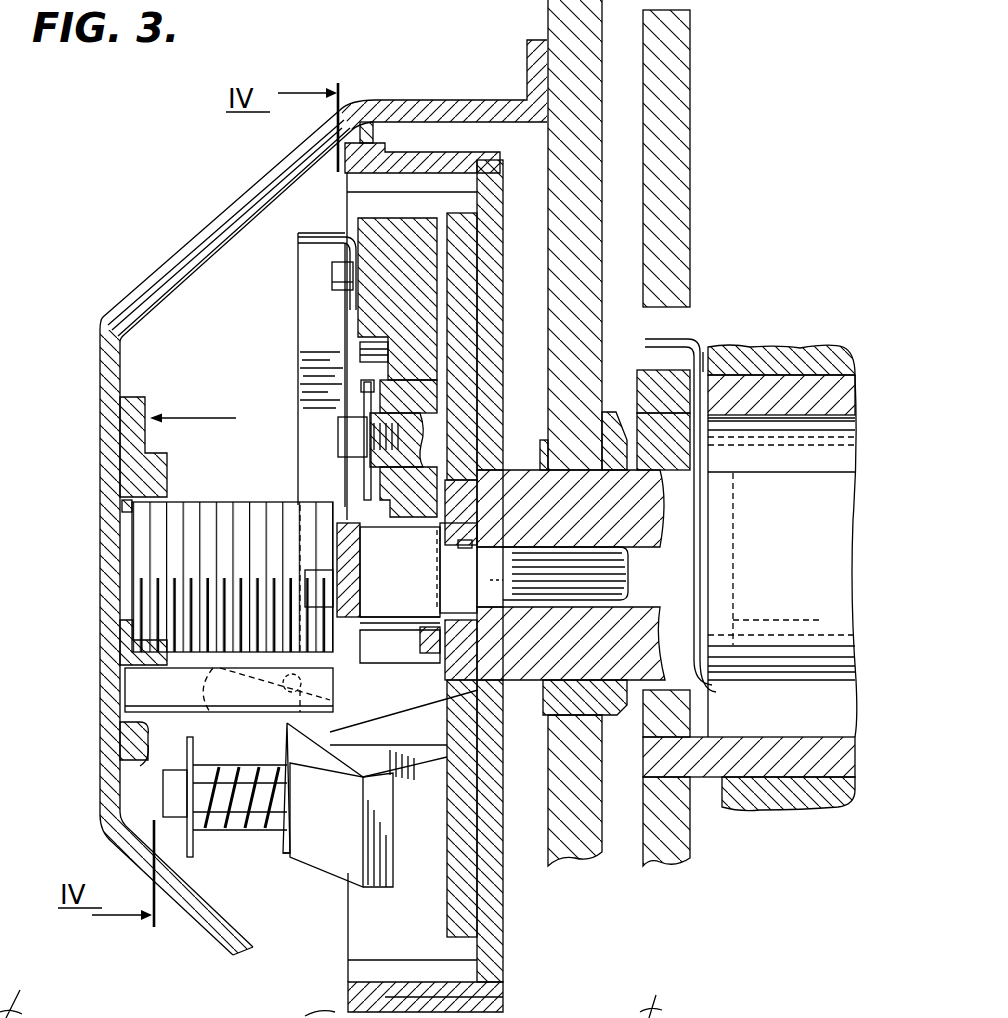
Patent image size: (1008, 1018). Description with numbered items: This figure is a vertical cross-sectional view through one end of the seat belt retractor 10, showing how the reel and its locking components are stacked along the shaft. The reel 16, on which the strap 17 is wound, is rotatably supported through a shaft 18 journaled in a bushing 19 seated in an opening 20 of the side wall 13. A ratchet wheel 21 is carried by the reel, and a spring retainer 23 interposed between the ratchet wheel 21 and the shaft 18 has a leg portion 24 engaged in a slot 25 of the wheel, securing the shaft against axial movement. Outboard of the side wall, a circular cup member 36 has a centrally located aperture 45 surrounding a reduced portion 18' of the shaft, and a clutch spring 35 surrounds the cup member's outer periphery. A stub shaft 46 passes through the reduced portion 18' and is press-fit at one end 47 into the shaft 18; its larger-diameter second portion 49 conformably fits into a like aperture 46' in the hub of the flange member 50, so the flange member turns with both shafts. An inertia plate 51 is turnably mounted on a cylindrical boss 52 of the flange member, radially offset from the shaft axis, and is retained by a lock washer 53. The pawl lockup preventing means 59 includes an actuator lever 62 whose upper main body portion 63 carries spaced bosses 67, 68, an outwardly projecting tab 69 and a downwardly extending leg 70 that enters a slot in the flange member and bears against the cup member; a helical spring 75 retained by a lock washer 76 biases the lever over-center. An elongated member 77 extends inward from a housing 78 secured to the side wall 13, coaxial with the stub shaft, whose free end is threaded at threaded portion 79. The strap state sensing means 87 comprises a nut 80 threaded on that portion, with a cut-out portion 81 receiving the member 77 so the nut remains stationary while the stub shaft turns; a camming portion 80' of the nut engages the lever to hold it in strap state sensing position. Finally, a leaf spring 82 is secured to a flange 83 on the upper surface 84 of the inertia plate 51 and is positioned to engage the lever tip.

The seat belt retractor 10 is at (808, 126).
The side wall 13 is at (548, 18).
The reel 16 is at (775, 380).
The strap 17 is at (832, 365).
The shaft 18 is at (793, 556).
The reduced portion of shaft 18' is at (562, 702).
The hub 19 is at (604, 470).
The opening 20 is at (562, 440).
The ratchet wheel 21 is at (672, 108).
The spring member or retainer 23 is at (703, 370).
The leg portion 24 is at (667, 340).
The slot 25 is at (655, 310).
The clutch spring 35 is at (430, 150).
The cup member 36 is at (490, 197).
The aperture 45 is at (500, 510).
The stub shaft 46 is at (518, 594).
The aperture in hub of flange member 46' is at (407, 593).
The end of stub shaft 47 is at (640, 577).
The second portion of stub shaft 49 is at (460, 545).
The flange member 50 is at (457, 308).
The inertia member or plate 51 is at (406, 367).
The cylindrical boss 52 is at (345, 435).
The lock washer 53 is at (366, 393).
The pawl lockup preventing means 59 is at (268, 902).
The actuator lever 62 is at (384, 891).
The upper main body portion 63 is at (298, 757).
The boss 67 is at (283, 852).
The boss 68 is at (277, 757).
The tab 69 is at (305, 683).
The leg 70 is at (430, 720).
The helical spring 75 is at (213, 840).
The lock washer 76 is at (190, 860).
The elongated member 77 is at (229, 689).
The housing 78 is at (108, 716).
The threaded portion 79 is at (205, 522).
The nut 80 is at (108, 531).
The camming portion 80' is at (102, 777).
The cut-out portion 81 is at (140, 725).
The leaf spring 82 is at (298, 331).
The flange 83 is at (357, 302).
The upper surface of inertia plate 84 is at (357, 240).
The strap state sensing means 87 is at (175, 396).